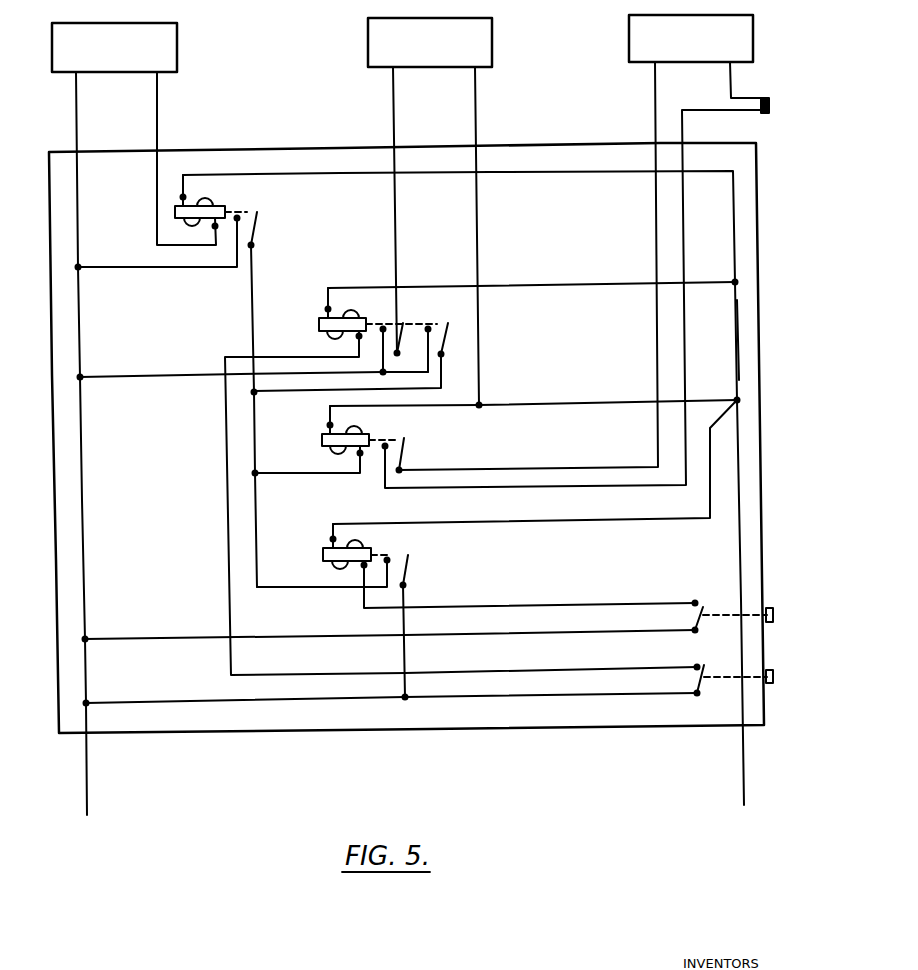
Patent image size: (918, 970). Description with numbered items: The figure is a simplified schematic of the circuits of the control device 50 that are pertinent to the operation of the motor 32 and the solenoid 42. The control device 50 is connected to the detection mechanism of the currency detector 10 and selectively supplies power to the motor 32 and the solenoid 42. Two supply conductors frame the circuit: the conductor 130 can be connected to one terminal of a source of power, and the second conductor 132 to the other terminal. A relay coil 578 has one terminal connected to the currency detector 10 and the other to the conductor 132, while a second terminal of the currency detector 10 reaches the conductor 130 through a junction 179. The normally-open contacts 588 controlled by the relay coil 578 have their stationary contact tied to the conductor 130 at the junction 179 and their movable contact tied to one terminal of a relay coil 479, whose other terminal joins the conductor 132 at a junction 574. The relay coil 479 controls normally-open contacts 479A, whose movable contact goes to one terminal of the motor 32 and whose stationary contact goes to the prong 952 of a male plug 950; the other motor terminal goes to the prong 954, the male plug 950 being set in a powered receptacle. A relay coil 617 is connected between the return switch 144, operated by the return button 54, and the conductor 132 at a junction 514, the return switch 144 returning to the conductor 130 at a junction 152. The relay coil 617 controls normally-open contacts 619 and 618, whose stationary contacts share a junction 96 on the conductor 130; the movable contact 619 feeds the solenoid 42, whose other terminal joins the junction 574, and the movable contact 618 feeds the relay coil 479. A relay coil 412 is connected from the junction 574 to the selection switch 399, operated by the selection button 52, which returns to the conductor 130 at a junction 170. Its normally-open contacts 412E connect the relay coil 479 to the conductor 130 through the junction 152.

The currency detector 10 is at (178, 38).
The solenoid 42 is at (492, 27).
The motor 32 is at (629, 25).
The control device 50 is at (430, 733).
The selection button 52 is at (800, 588).
The return button 54 is at (800, 652).
The prong 954 is at (778, 76).
The prong 952 is at (780, 128).
The male plug 950 is at (764, 110).
The conductor 130 is at (83, 490).
The junction 179 is at (79, 267).
The relay coil 578 is at (220, 206).
The normally-open contacts 588 is at (259, 213).
The junction 514 is at (733, 278).
The second conductor 132 is at (738, 334).
The relay coil 617 is at (319, 323).
The normally-open contacts 619 is at (401, 320).
The normally-open contacts 618 is at (442, 323).
The junction 96 is at (80, 377).
The relay coil 479 is at (322, 435).
The normally-open contacts 479A is at (397, 425).
The junction 574 is at (736, 398).
The relay coil 412 is at (321, 562).
The normally-open contacts 412E is at (401, 540).
The junction 170 is at (85, 639).
The junction 152 is at (86, 703).
The selection switch 399 is at (720, 583).
The return switch 144 is at (724, 702).